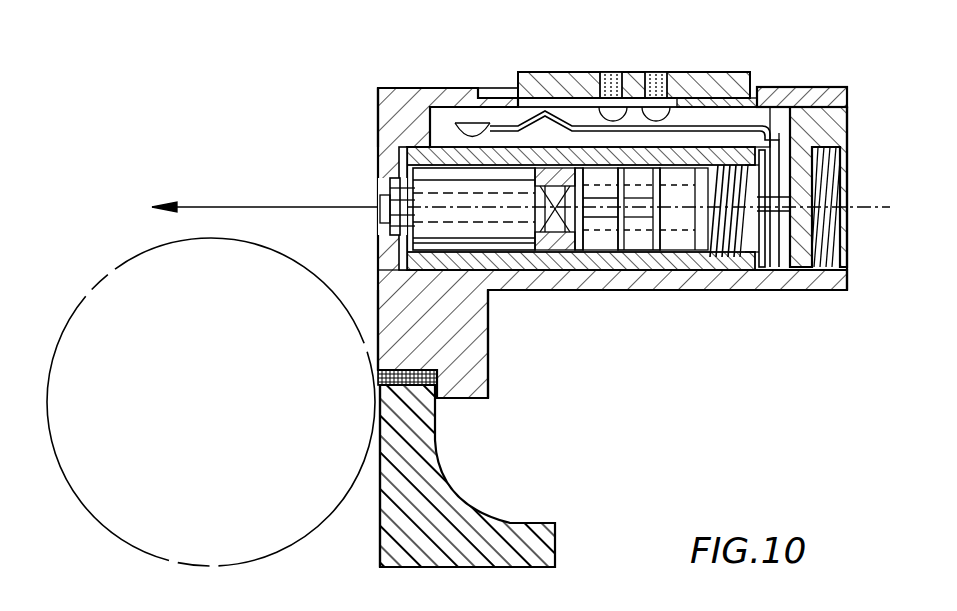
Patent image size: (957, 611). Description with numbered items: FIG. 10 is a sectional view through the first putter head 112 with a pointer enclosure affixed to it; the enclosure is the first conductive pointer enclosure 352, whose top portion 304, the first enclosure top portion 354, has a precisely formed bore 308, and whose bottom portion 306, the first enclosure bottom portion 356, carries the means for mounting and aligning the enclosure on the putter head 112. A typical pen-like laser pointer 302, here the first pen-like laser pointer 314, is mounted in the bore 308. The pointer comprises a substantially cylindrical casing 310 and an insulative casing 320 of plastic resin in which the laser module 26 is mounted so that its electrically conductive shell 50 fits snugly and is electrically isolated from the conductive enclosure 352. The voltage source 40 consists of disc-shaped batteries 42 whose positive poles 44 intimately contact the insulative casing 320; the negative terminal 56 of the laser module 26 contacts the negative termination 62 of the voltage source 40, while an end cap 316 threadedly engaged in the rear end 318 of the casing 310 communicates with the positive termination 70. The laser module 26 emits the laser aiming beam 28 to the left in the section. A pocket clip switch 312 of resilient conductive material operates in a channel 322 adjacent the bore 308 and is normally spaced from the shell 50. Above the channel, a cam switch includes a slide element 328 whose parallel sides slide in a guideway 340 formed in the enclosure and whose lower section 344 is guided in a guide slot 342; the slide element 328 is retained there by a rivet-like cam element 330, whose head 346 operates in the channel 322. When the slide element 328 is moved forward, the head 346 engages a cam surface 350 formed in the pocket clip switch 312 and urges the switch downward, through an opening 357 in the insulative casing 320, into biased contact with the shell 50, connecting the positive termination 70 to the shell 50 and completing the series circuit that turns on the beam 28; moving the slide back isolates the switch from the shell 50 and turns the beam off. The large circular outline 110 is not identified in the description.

The top portion 304 is at (378, 96).
The first enclosure top portion 354 is at (386, 88).
The bore 308 is at (410, 337).
The insulative casing 320 is at (378, 300).
The first enclosure bottom portion 356 is at (463, 362).
The first conductive pointer enclosure 352 is at (378, 373).
The bottom portion 306 is at (441, 428).
The first putter head 112 is at (380, 430).
The wheel 110 is at (79, 305).
The laser aiming beam 28 is at (247, 207).
The slide element 328 is at (490, 92).
The guideway 340 is at (478, 88).
The head 346 is at (621, 74).
The lower section 344 is at (673, 72).
The guide slot 342 is at (575, 100).
The cam surface 350 is at (514, 88).
The pocket clip switch 312 is at (772, 88).
The rear end 318 is at (840, 124).
The end cap 316 is at (838, 207).
The channel 322 is at (445, 122).
The rivet-like cam element 330 is at (585, 127).
The pen-like laser pointer 302 is at (412, 142).
The cylindrical casing 310 is at (493, 262).
The first pen-like laser pointer 314 is at (400, 158).
The laser module 26 is at (392, 188).
The opening 357 is at (480, 158).
The cylindrical shell 50 is at (450, 226).
The negative terminal 56 is at (557, 252).
The negative termination 62 is at (598, 255).
The battery 42 is at (628, 252).
The voltage source 40 is at (657, 252).
The positive pole 44 is at (688, 252).
The positive termination 70 is at (736, 268).